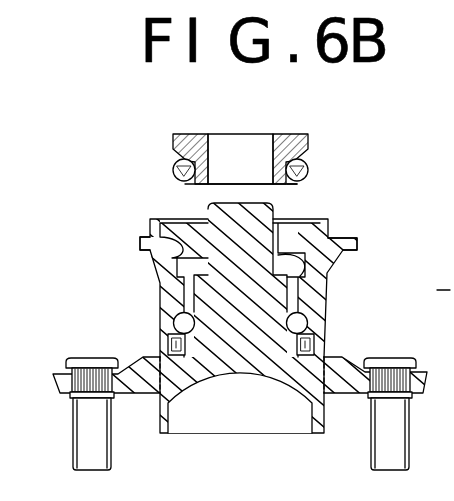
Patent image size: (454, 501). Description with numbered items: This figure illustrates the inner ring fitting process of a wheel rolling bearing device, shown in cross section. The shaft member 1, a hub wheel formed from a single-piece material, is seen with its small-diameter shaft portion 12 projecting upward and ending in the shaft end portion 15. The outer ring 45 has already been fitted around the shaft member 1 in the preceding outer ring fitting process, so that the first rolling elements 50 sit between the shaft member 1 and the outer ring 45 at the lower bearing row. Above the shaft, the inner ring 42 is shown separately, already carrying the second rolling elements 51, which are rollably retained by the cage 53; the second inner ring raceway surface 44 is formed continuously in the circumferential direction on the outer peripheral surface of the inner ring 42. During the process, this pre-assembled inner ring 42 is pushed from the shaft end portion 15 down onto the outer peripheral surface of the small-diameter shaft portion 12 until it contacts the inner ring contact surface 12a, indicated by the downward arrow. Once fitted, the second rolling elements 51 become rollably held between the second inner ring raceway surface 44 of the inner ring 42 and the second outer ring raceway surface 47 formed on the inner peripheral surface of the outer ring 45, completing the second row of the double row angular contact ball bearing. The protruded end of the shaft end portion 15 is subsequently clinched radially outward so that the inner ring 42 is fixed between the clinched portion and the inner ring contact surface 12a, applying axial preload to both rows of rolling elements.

The shaft member 1 is at (112, 305).
The small-diameter shaft portion 12 is at (280, 253).
The inner ring contact surface 12a is at (285, 271).
The shaft end portion 15 is at (229, 203).
The inner ring 42 is at (309, 137).
The second inner ring raceway surface 44 is at (173, 169).
The outer ring 45 is at (322, 291).
The second outer ring raceway surface 47 is at (140, 237).
The first rolling elements 50 is at (308, 318).
The second rolling elements 51 is at (309, 170).
The cage 53 is at (297, 184).